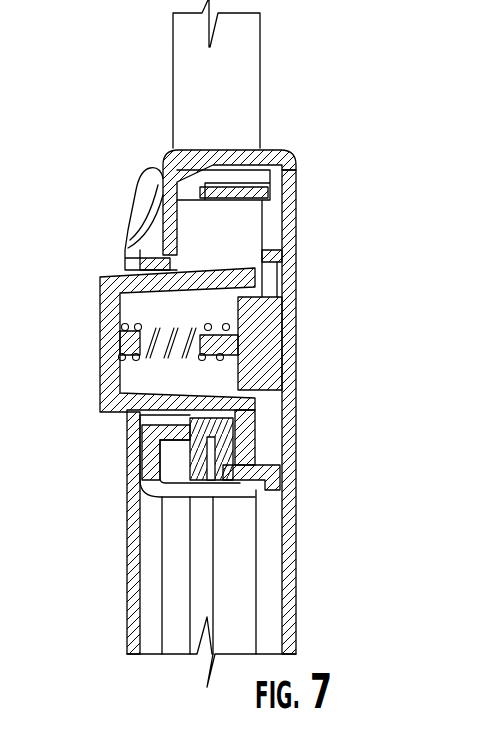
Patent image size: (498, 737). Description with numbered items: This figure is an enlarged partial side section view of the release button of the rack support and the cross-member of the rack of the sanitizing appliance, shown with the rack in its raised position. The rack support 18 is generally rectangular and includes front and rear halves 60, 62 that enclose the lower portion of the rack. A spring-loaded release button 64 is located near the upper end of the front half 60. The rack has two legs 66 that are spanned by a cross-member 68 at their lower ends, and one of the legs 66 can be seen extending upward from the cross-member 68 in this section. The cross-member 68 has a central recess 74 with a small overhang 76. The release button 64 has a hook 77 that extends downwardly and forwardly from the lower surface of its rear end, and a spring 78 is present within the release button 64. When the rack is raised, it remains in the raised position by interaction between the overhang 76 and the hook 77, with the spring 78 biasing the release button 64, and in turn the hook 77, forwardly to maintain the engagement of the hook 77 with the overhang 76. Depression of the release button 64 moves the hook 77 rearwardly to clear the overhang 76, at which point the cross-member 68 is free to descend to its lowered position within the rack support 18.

The rack support 18 is at (362, 172).
The front half 60 is at (128, 568).
The rear half 62 is at (296, 596).
The release button 64 is at (100, 375).
The legs 66 is at (233, 93).
The cross-member 68 is at (228, 480).
The central recess 74 is at (266, 452).
The overhang 76 is at (228, 430).
The hook 77 is at (242, 437).
The spring 78 is at (205, 345).